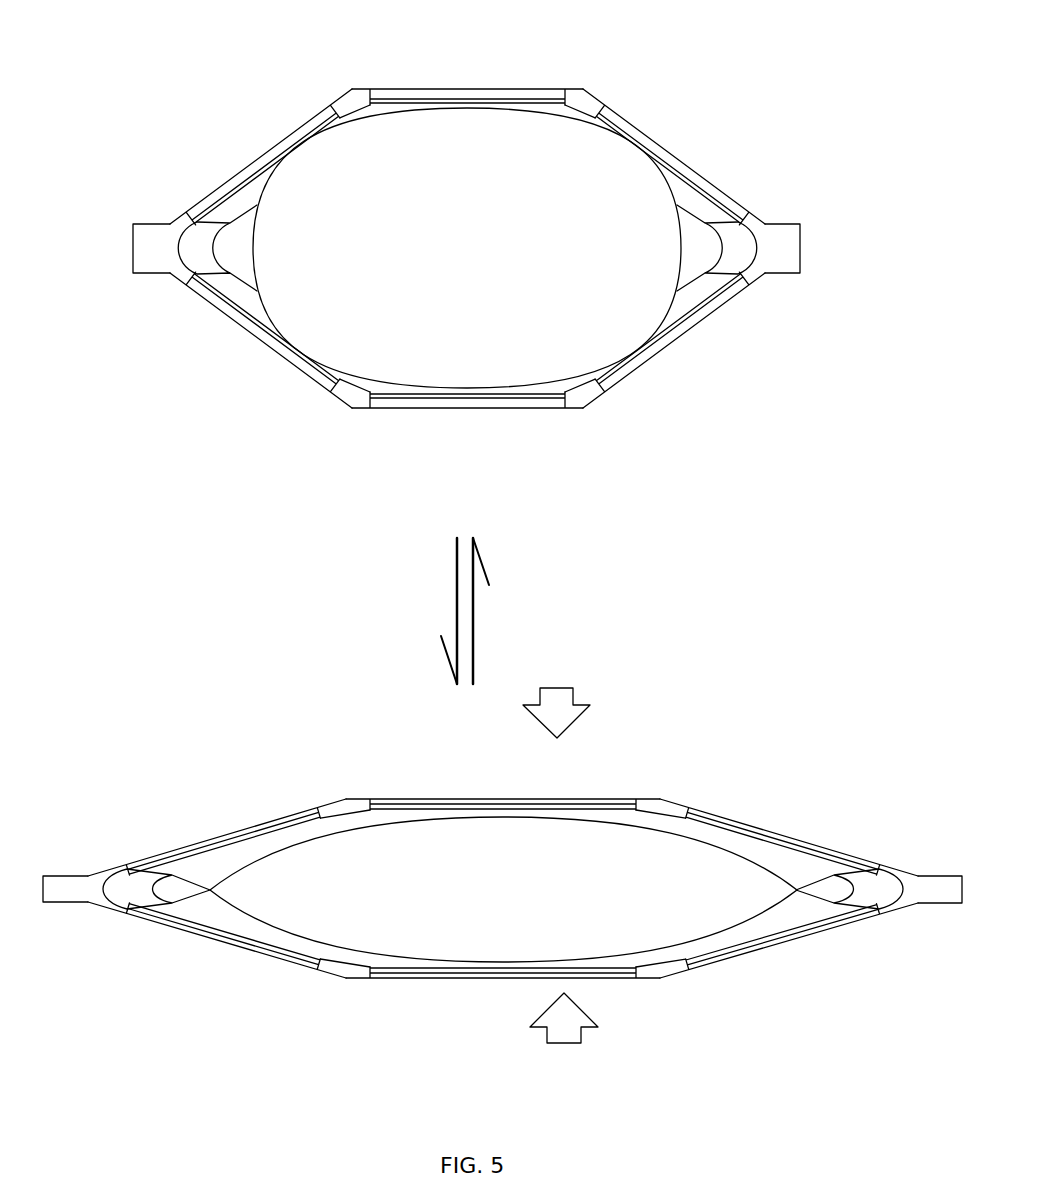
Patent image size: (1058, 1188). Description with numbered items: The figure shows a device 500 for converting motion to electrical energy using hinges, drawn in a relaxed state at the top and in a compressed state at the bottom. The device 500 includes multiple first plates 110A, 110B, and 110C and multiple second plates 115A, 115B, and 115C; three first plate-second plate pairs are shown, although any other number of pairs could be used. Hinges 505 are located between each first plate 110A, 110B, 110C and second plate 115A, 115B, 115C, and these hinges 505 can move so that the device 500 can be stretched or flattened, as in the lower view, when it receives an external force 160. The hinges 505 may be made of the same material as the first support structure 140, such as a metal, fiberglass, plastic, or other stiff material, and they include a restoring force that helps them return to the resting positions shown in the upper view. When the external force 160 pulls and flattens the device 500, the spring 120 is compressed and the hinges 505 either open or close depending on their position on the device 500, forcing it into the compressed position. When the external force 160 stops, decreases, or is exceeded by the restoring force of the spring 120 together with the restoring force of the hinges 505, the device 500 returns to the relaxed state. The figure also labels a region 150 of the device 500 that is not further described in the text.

The device 500 is at (265, 62).
The hinges 505 is at (360, 118).
The first plate 110A is at (327, 136).
The first plate 110B is at (392, 108).
The first plate 110C is at (597, 128).
The second plate 115A is at (333, 363).
The second plate 115B is at (388, 385).
The second plate 115C is at (600, 365).
The spring 120 is at (478, 259).
The first support structure 140 is at (560, 72).
The lower portion 150 is at (524, 432).
The external force 160 is at (577, 676).